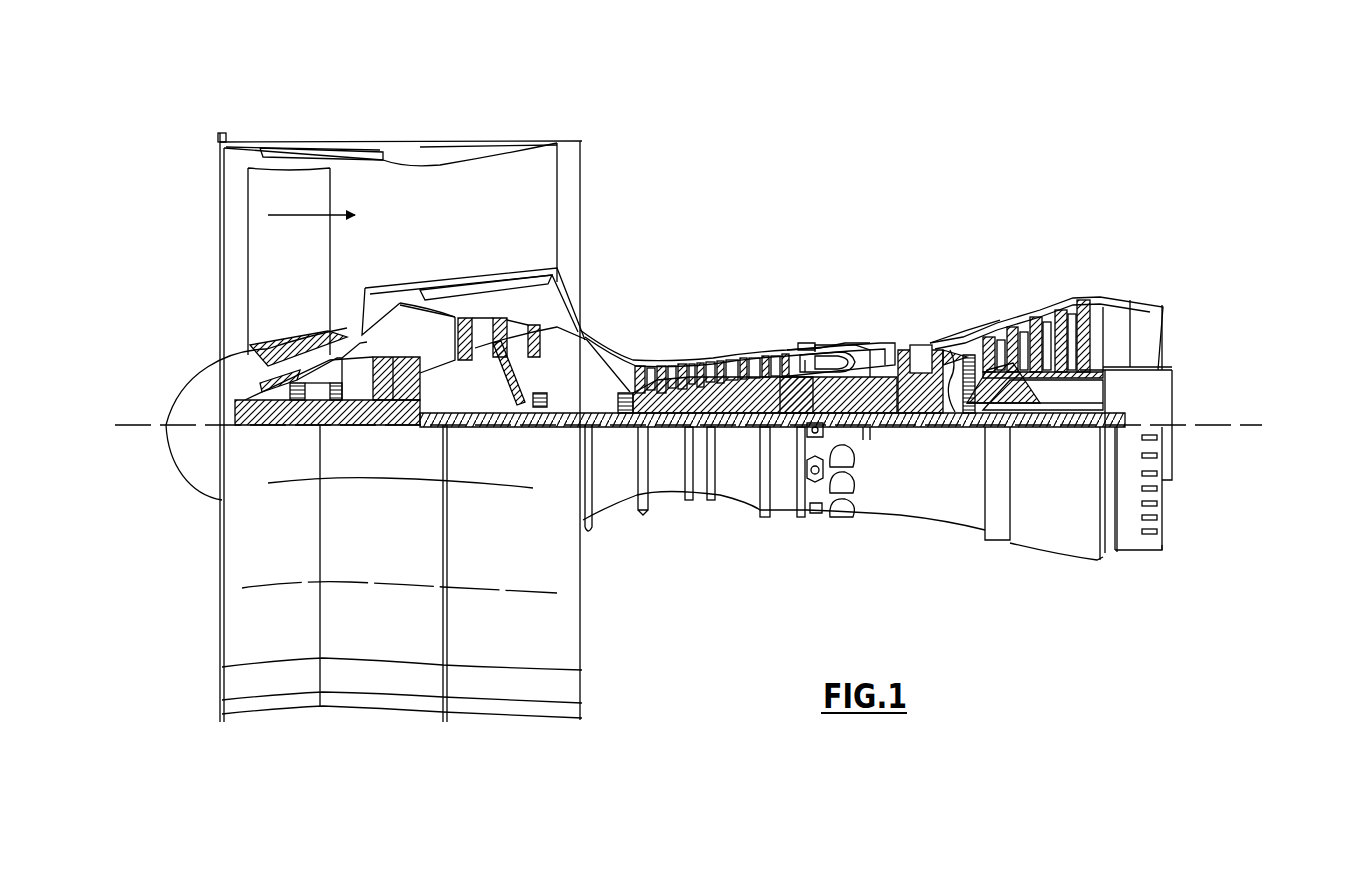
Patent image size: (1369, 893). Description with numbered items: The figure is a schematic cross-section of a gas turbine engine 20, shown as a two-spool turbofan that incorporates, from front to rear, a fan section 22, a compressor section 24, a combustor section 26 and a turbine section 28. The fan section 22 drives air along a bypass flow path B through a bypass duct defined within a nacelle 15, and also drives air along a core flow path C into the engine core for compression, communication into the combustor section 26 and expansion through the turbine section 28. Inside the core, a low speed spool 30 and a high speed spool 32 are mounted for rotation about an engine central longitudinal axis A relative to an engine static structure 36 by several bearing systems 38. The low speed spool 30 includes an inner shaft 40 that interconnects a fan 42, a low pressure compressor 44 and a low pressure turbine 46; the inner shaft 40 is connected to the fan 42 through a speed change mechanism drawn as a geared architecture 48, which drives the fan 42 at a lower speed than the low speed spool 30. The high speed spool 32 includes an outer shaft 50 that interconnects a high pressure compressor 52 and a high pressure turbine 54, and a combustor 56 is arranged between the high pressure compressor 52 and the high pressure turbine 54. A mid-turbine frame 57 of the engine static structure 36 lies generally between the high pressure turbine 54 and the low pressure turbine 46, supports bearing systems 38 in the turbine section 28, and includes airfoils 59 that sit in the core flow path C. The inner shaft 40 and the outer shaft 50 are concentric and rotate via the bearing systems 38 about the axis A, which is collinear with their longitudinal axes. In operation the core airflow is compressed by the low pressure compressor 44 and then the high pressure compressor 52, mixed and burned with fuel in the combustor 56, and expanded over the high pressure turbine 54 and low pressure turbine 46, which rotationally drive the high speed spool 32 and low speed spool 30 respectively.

The gas turbine engine 20 is at (868, 184).
The fan section 22 is at (332, 134).
The nacelle 15 is at (403, 150).
The compressor section 24 is at (636, 326).
The combustor section 26 is at (853, 312).
The turbine section 28 is at (1005, 282).
The low speed spool 30 is at (740, 435).
The high speed spool 32 is at (784, 376).
The engine static structure 36 is at (780, 516).
The bearing systems 38 is at (537, 410).
The inner shaft 40 is at (603, 427).
The fan 42 is at (305, 269).
The low pressure compressor 44 is at (505, 335).
The low pressure turbine 46 is at (1048, 322).
The geared architecture 48 is at (410, 408).
The outer shaft 50 is at (868, 408).
The high pressure compressor 52 is at (713, 392).
The high pressure turbine 54 is at (920, 340).
The combustor 56 is at (857, 363).
The mid-turbine frame 57 is at (968, 330).
The airfoils 59 is at (992, 384).
The engine central longitudinal axis A is at (1258, 424).
The bypass flow path B is at (303, 214).
The core flow path C is at (396, 320).